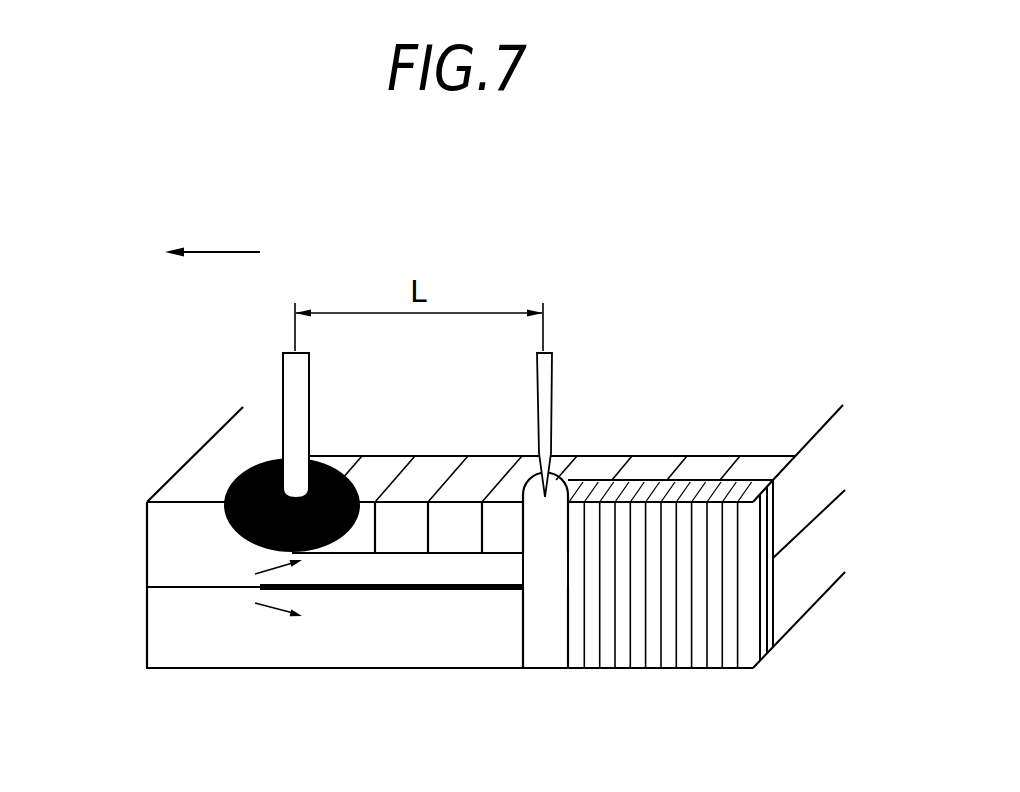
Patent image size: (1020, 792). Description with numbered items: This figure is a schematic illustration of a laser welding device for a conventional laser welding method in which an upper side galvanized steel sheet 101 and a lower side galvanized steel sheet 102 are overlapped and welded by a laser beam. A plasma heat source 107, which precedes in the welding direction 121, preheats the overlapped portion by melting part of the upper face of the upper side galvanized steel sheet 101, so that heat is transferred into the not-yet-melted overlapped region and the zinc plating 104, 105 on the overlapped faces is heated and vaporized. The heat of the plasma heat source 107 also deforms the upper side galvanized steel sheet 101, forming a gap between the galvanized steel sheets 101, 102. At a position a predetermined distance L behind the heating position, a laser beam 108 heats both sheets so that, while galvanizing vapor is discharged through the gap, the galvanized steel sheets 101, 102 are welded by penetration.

The upper side galvanized steel sheet 101 is at (157, 517).
The lower side galvanized steel sheet 102 is at (158, 650).
The zinc plating 104 is at (168, 582).
The zinc plating 105 is at (177, 592).
The plasma heat source 107 is at (282, 373).
The laser beam 108 is at (553, 382).
The welding direction 121 is at (212, 234).